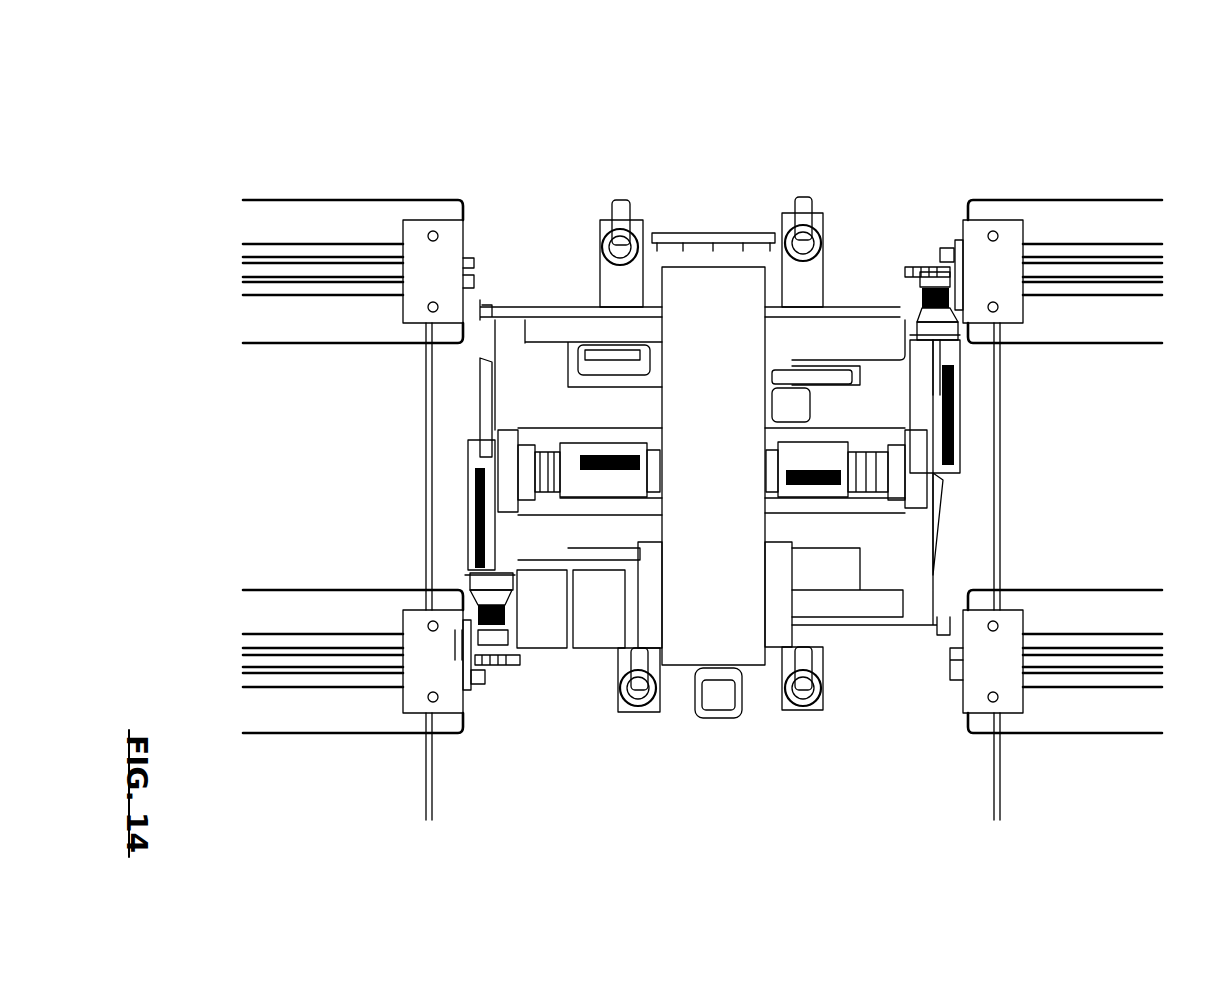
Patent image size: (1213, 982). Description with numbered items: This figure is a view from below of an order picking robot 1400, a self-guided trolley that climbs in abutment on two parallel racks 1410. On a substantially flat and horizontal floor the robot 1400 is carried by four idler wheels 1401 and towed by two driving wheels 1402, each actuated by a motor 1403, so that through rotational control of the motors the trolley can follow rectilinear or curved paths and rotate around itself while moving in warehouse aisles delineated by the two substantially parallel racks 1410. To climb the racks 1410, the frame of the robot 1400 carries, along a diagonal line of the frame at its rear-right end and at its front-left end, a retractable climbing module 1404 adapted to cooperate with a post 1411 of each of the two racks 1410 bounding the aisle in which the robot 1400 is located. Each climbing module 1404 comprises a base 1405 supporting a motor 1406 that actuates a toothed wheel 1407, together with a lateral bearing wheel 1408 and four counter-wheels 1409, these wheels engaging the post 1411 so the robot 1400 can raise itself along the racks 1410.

The robot 1400 is at (848, 750).
The idler wheel 1401 is at (620, 228).
The driving wheel 1402 is at (505, 455).
The motor 1403 is at (585, 470).
The retractable climbing module 1404 is at (878, 250).
The base 1405 is at (478, 650).
The motor 1406 is at (465, 490).
The toothed wheel 1407 is at (520, 660).
The lateral bearing wheel 1408 is at (488, 680).
The counter-wheel 1409 is at (455, 650).
The rack 1410 is at (365, 152).
The post 1411 is at (437, 255).